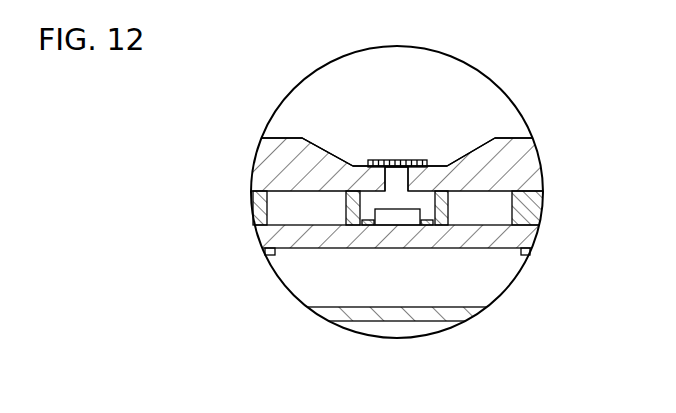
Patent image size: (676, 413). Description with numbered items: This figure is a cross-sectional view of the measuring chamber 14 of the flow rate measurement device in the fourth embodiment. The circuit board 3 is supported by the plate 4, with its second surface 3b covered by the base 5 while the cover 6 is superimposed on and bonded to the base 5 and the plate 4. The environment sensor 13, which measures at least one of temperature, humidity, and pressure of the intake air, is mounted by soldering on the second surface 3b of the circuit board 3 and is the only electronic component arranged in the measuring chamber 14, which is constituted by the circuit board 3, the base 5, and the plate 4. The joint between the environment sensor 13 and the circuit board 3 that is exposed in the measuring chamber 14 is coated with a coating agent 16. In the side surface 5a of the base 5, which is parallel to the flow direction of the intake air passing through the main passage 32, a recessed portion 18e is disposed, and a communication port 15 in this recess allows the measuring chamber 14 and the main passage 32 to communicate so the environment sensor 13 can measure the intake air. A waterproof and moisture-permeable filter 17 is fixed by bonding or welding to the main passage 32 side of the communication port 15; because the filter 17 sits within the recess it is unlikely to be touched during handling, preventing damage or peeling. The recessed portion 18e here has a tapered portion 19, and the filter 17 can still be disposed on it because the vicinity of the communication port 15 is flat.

The circuit board 3 is at (470, 232).
The second surface 3b is at (292, 224).
The plate 4 is at (448, 203).
The base 5 is at (473, 157).
The side surface 5a is at (483, 160).
The cover 6 is at (420, 320).
The environment sensor 13 is at (393, 215).
The measuring chamber 14 is at (346, 213).
The communication port 15 is at (388, 181).
The coating agent 16 is at (371, 225).
The waterproof and moisture-permeable filter 17 is at (400, 160).
The recessed portion 18e is at (431, 162).
The tapered portion 19 is at (468, 158).
The main passage 32 is at (357, 68).